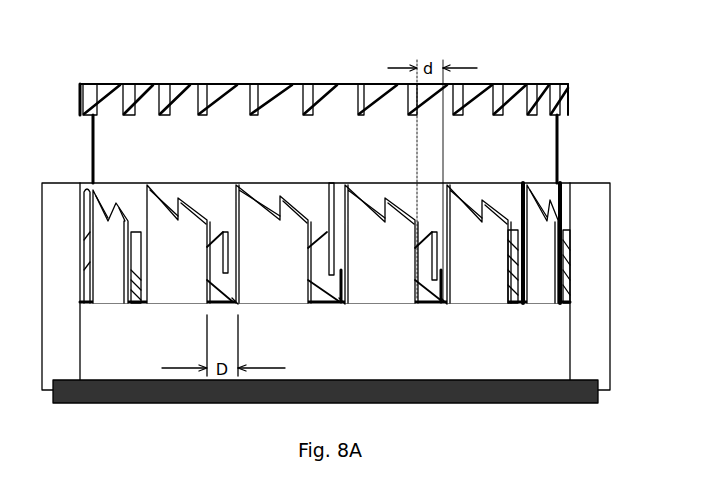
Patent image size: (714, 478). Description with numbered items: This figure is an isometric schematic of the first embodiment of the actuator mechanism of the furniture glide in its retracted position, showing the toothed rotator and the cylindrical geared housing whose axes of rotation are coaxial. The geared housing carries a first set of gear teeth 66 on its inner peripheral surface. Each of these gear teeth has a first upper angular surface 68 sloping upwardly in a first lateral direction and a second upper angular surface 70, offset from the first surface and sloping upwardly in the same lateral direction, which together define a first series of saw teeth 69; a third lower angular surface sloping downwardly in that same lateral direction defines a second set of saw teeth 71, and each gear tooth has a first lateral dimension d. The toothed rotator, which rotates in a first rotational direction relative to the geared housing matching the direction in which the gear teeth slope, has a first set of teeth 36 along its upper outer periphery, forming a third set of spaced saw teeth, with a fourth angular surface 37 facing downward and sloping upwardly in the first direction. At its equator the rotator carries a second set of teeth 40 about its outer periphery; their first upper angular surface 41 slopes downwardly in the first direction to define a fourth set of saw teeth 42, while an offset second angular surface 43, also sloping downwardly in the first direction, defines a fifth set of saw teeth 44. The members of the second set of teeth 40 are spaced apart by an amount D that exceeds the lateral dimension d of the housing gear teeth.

The first set of teeth 36 is at (479, 100).
The fourth angular surface 37 is at (508, 90).
The second set of teeth 40 is at (163, 263).
The first upper angular surface 41 is at (168, 196).
The fourth set of saw teeth 42 is at (152, 188).
The second angular surface 43 is at (196, 200).
The fifth set of saw teeth 44 is at (184, 200).
The first set of gear teeth 66 is at (408, 274).
The first upper angular surface 68 is at (323, 233).
The first series of saw teeth 69 is at (331, 268).
The second upper angular surface 70 is at (333, 270).
The second set of saw teeth 71 is at (443, 303).